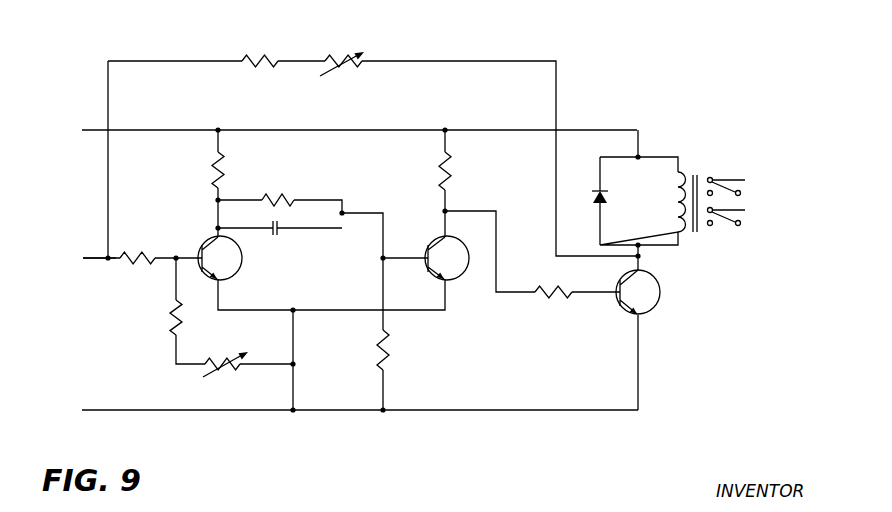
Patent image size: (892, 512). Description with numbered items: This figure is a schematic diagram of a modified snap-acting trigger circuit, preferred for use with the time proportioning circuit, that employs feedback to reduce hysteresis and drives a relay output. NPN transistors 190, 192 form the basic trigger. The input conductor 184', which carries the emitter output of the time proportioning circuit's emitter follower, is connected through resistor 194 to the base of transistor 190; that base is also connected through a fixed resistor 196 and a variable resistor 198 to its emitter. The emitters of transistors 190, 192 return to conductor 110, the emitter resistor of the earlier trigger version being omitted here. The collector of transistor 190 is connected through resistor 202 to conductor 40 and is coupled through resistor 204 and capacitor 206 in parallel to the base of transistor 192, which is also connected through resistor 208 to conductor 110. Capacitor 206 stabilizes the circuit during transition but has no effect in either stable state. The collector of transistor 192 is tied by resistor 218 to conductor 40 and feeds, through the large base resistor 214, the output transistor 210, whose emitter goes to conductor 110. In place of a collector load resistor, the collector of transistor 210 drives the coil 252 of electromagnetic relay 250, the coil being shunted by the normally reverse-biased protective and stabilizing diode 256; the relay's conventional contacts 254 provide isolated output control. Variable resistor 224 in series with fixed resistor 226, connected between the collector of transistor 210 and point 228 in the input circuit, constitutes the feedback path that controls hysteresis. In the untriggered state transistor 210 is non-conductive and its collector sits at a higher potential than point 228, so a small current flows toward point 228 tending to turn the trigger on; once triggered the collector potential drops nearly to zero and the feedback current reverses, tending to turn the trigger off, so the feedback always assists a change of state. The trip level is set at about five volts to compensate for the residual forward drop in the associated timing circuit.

The conductor 40 is at (96, 128).
The conductor 110 is at (140, 411).
The conductor 184' is at (80, 238).
The point 228 is at (106, 262).
The resistor 194 is at (140, 252).
The fixed resistor 196 is at (168, 318).
The variable resistor 198 is at (232, 370).
The NPN transistor 190 is at (238, 270).
The NPN transistor 192 is at (462, 282).
The resistor 202 is at (228, 172).
The resistor 204 is at (288, 198).
The capacitor 206 is at (285, 232).
The resistor 208 is at (392, 354).
The resistor 218 is at (455, 182).
The base resistor 214 is at (561, 299).
The output transistor 210 is at (656, 305).
The fixed resistor 226 is at (262, 58).
The variable resistor 224 is at (353, 67).
The electromagnetic relay 250 is at (705, 159).
The coil 252 is at (676, 222).
The diode 256 is at (610, 196).
The contacts 254 is at (747, 202).